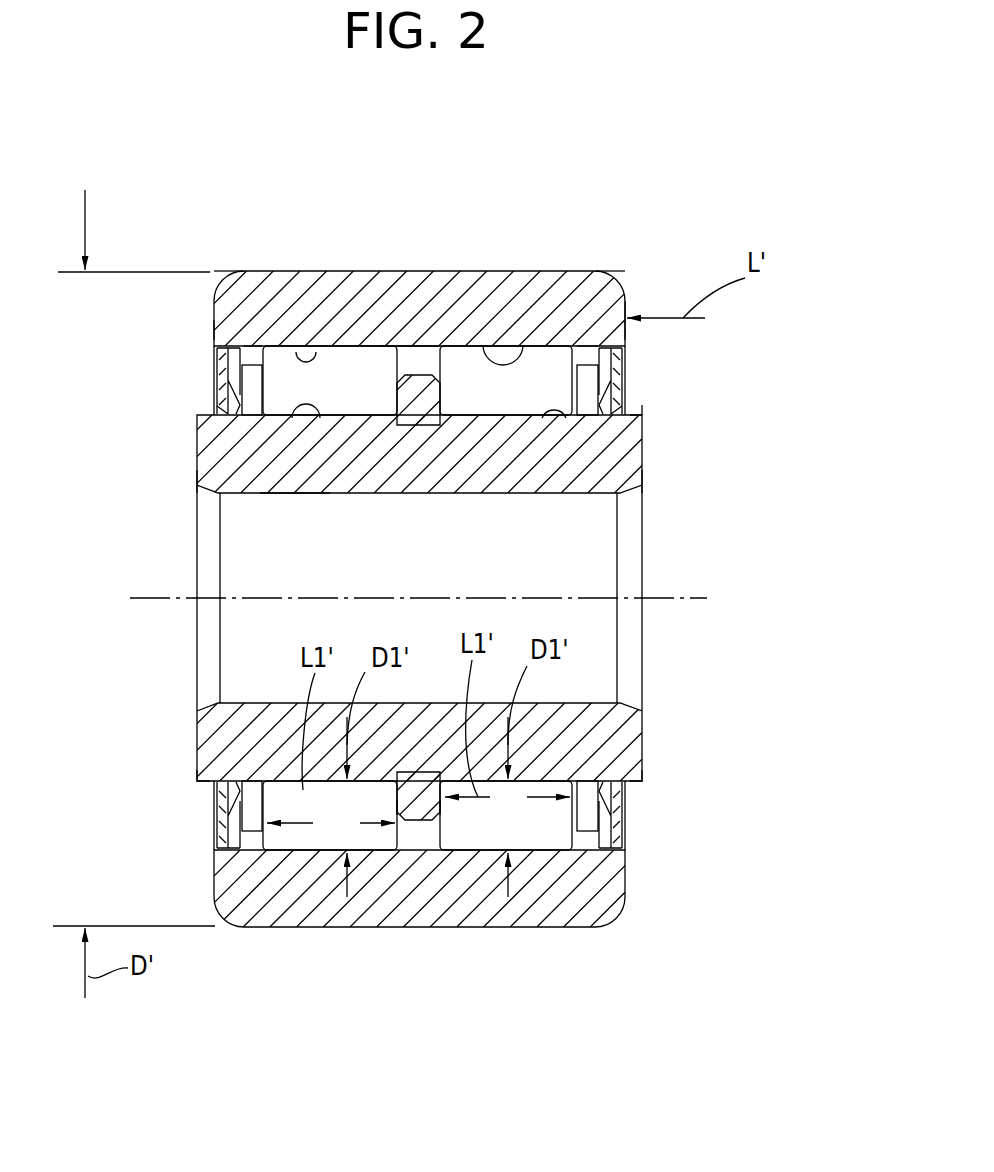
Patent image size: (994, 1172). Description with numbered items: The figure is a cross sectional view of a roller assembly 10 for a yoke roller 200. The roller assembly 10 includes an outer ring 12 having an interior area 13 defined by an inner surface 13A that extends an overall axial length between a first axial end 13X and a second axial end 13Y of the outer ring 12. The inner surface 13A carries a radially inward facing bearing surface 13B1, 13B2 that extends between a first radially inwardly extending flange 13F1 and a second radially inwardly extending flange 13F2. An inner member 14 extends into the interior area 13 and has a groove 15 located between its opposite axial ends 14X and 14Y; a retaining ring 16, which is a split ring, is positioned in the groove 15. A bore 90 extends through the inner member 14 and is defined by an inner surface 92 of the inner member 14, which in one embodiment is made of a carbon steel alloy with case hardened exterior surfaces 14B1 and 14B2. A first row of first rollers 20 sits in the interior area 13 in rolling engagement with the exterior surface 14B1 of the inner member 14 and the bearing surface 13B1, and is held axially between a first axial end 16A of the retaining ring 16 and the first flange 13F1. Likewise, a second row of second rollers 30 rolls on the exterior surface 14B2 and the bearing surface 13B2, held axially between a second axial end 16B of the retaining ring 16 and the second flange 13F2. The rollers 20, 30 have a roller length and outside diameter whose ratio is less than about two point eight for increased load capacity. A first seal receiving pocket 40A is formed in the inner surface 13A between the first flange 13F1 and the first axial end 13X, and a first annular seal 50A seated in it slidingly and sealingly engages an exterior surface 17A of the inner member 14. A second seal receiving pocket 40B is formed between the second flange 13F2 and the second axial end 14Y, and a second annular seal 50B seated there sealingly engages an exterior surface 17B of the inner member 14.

The roller assembly 10 is at (182, 212).
The outer ring 12 is at (484, 305).
The interior area 13 is at (421, 358).
The inner surface 13A is at (393, 358).
The radially inward facing bearing surface 13B1 is at (296, 352).
The radially inward facing bearing surface 13B2 is at (523, 345).
The first radially inwardly extending flange 13F1 is at (252, 348).
The second radially inwardly extending flange 13F2 is at (588, 344).
The first axial end 13X is at (214, 336).
The second axial end 13Y is at (640, 296).
The inner member 14 is at (212, 453).
The exterior surface 14B1 is at (320, 418).
The exterior surface 14B2 is at (566, 418).
The axial end 14X is at (197, 492).
The axial end 14Y is at (642, 484).
The groove 15 is at (437, 428).
The retaining ring 16 is at (418, 800).
The first axial end 16A is at (395, 812).
The second axial end 16B is at (446, 813).
The exterior surface 17A is at (258, 770).
The exterior surface 17B is at (642, 415).
The first rollers 20 is at (303, 833).
The second rollers 30 is at (540, 828).
The first seal receiving pocket 40A is at (212, 376).
The second seal receiving pocket 40B is at (629, 361).
The first annular seal 50A is at (212, 410).
The second annular seal 50B is at (629, 396).
The bore 90 is at (580, 575).
The inner surface 92 is at (293, 494).
The yoke roller 200 is at (717, 228).